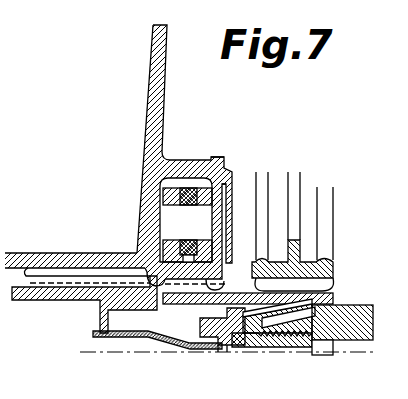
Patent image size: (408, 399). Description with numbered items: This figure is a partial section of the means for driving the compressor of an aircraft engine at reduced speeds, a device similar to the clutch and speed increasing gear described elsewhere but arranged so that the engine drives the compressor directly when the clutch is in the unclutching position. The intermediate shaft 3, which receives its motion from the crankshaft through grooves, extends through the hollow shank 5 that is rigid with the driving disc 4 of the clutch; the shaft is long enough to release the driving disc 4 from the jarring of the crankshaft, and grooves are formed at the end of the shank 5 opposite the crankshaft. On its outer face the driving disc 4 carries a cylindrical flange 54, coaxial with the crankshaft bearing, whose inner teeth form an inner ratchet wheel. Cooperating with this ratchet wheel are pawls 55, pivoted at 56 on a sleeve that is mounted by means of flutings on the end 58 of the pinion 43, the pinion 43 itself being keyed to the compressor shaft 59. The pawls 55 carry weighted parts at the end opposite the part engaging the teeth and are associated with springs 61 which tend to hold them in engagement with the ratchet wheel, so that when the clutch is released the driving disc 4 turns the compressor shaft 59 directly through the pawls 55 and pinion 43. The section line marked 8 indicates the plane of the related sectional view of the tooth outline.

The intermediate shaft 3 is at (55, 295).
The driving disc 4 is at (157, 64).
The hollow shank 5 is at (33, 260).
The section line 8 is at (189, 67).
The pinion 43 is at (302, 289).
The cylindrical flange 54 is at (178, 166).
The pawls 55 is at (206, 166).
The pivot 56 is at (173, 220).
The end of pinion 58 is at (185, 300).
The compressor shaft 59 is at (357, 332).
The springs 61 is at (187, 261).